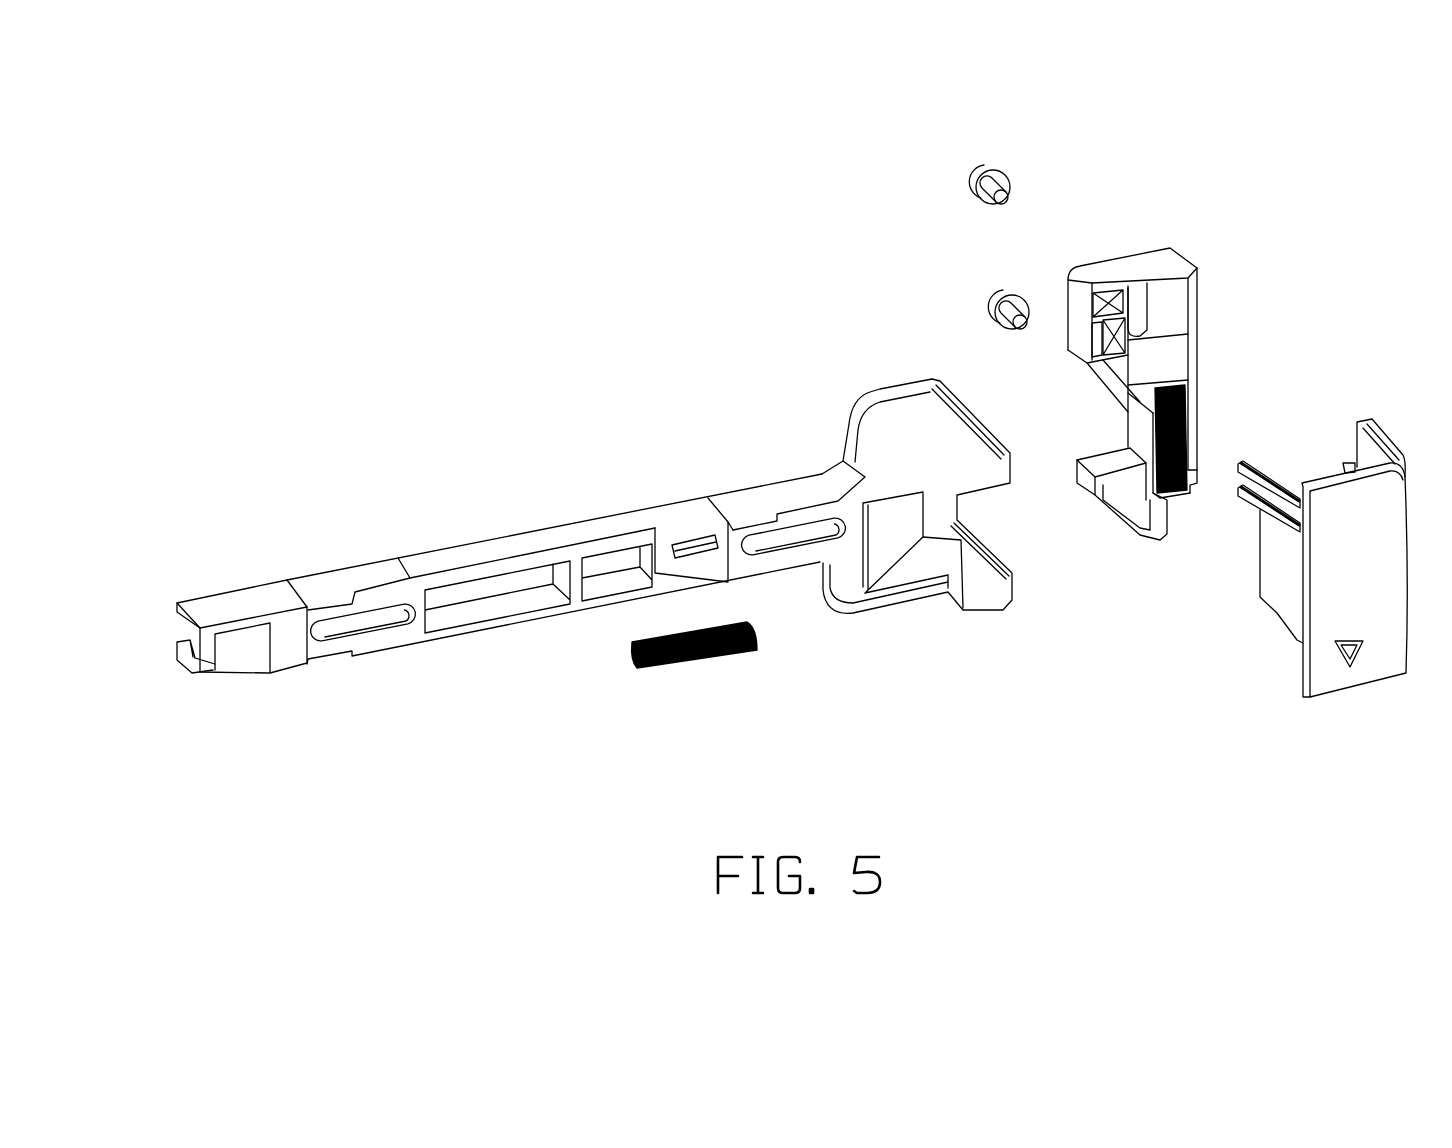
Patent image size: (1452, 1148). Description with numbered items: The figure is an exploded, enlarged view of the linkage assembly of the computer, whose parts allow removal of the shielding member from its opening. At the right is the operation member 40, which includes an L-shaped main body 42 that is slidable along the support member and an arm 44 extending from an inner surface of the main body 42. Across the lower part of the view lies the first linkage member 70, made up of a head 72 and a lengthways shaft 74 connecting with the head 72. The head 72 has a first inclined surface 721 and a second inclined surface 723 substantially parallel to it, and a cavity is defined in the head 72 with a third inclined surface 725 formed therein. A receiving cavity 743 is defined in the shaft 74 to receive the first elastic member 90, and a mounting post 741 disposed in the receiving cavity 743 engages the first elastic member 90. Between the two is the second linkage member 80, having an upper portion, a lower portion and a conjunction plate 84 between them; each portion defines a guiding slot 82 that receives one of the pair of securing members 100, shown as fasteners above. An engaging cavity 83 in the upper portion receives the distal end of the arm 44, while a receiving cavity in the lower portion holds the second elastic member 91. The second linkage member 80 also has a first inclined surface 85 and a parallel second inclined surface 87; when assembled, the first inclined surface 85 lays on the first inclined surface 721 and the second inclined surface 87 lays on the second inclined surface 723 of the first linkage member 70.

The operation member 40 is at (1310, 514).
The main body 42 is at (1335, 587).
The arm 44 is at (1260, 472).
The first linkage member 70 is at (628, 490).
The head 72 is at (924, 489).
The shaft 74 is at (443, 558).
The second linkage member 80 is at (1140, 407).
The guiding slot 82 is at (1140, 303).
The engaging cavity 83 is at (1118, 333).
The conjunction plate 84 is at (1173, 362).
The first inclined surface 85 is at (1103, 390).
The second inclined surface 87 is at (1123, 527).
The first elastic member 90 is at (752, 652).
The second elastic member 91 is at (1185, 487).
The securing members 100 is at (1003, 178).
The first inclined surface 721 is at (958, 397).
The second inclined surface 723 is at (980, 537).
The third inclined surface 725 is at (883, 547).
The mounting post 741 is at (687, 543).
The receiving cavity 743 is at (600, 590).